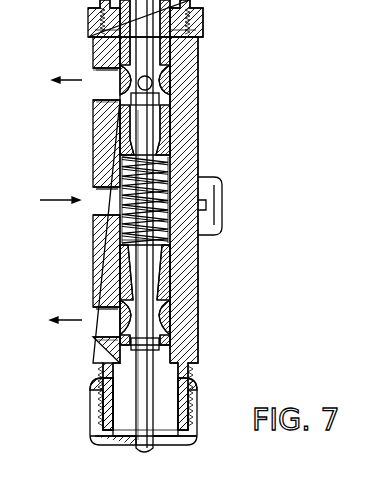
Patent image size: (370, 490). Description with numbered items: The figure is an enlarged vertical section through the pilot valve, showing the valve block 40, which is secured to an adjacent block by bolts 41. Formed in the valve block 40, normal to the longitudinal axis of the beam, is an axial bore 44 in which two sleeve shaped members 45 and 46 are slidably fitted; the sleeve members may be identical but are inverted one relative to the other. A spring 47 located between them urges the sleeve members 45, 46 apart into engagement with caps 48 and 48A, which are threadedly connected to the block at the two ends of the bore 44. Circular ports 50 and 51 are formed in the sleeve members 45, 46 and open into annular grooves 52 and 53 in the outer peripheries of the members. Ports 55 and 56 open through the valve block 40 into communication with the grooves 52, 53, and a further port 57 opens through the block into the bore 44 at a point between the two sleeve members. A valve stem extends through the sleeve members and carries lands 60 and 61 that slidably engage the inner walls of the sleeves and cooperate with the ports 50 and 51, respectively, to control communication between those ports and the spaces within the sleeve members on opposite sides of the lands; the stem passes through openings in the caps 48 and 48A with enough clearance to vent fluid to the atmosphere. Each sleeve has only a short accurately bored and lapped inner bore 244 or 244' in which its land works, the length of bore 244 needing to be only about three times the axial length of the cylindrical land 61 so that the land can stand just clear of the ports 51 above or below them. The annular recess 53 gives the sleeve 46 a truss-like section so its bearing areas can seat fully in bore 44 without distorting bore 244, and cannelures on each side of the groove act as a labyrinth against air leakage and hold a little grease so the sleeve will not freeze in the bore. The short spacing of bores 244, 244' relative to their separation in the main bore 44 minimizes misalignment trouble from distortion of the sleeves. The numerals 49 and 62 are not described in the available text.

The valve block 40 is at (199, 128).
The bolts 41 is at (224, 200).
The bore 44 is at (172, 166).
The sleeve shaped member 45 is at (127, 60).
The sleeve shaped member 46 is at (162, 351).
The spring 47 is at (170, 238).
The cap 48 is at (144, 226).
The cap 48A is at (93, 408).
The top nut 49 is at (145, 18).
The circular port 50 is at (152, 84).
The circular port 51 is at (168, 328).
The annular groove 52 is at (169, 72).
The annular groove 53 is at (170, 309).
The port 55 is at (92, 88).
The port 56 is at (96, 312).
The port 57 is at (93, 192).
The land 60 is at (100, 113).
The land 61 is at (95, 346).
The upper collar 62 is at (145, 99).
The inner bore 244 is at (183, 295).
The inner bore 244' is at (185, 77).